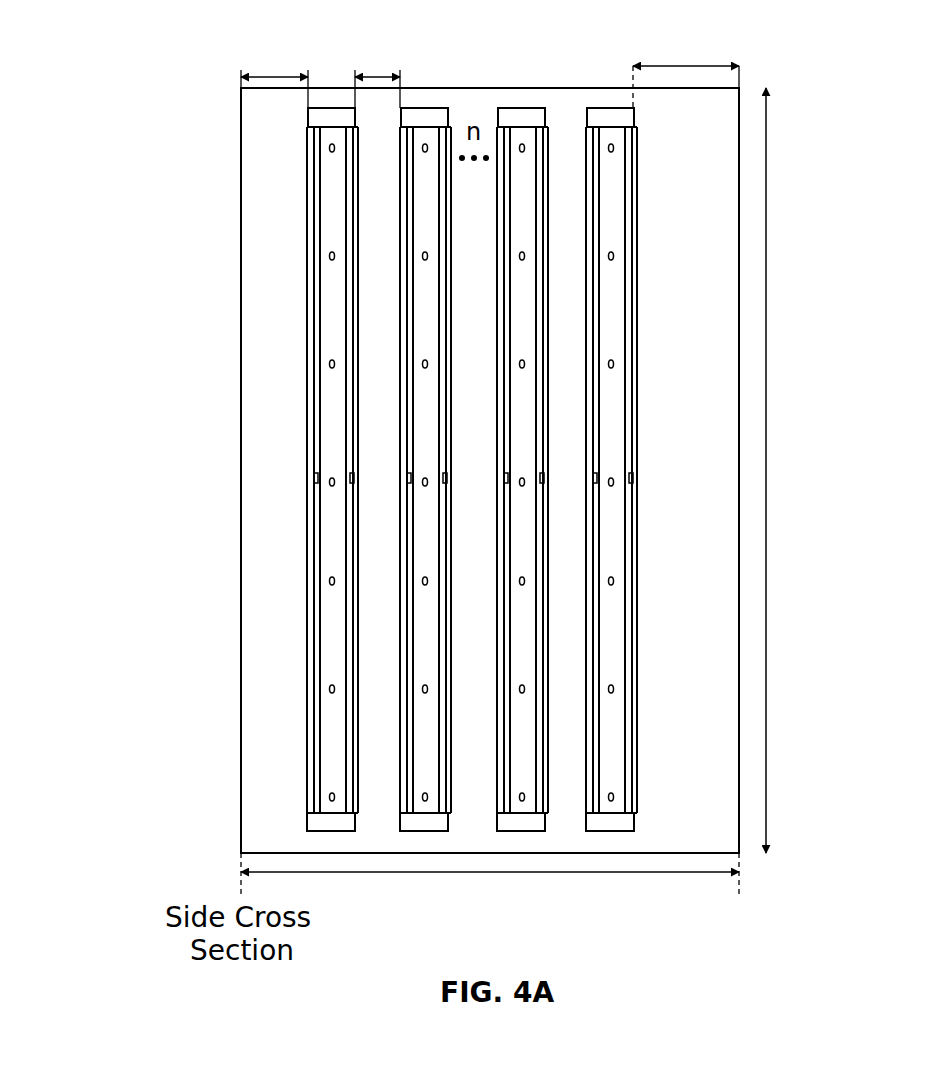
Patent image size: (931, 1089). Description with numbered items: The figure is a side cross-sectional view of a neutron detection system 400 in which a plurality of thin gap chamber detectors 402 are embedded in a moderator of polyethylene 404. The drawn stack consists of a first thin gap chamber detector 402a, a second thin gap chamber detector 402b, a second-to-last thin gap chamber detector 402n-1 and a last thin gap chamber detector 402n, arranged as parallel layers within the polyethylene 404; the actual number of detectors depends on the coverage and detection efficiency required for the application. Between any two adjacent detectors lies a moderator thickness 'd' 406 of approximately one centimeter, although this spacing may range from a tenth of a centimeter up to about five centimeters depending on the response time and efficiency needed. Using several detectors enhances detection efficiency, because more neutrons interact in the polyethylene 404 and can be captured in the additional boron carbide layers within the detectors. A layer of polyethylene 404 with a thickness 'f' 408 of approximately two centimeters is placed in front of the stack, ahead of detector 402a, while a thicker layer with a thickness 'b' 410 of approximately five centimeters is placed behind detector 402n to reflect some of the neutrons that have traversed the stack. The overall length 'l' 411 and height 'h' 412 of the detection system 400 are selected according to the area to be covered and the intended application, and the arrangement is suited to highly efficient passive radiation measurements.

The detection system 400 is at (393, 470).
The thin gap chamber detectors 402 is at (434, 493).
The first thin gap chamber detector 402a is at (308, 821).
The second thin gap chamber detector 402b is at (423, 822).
The second-to-last thin gap chamber detector 402n-1 is at (523, 822).
The last thin gap chamber detector 402n is at (613, 807).
The polyethylene 404 is at (240, 473).
The moderator thickness 'd' 406 is at (373, 75).
The thickness 'f' 408 is at (265, 75).
The thickness 'b' 410 is at (669, 65).
The length 'l' 411 is at (552, 873).
The height 'h' 412 is at (767, 518).